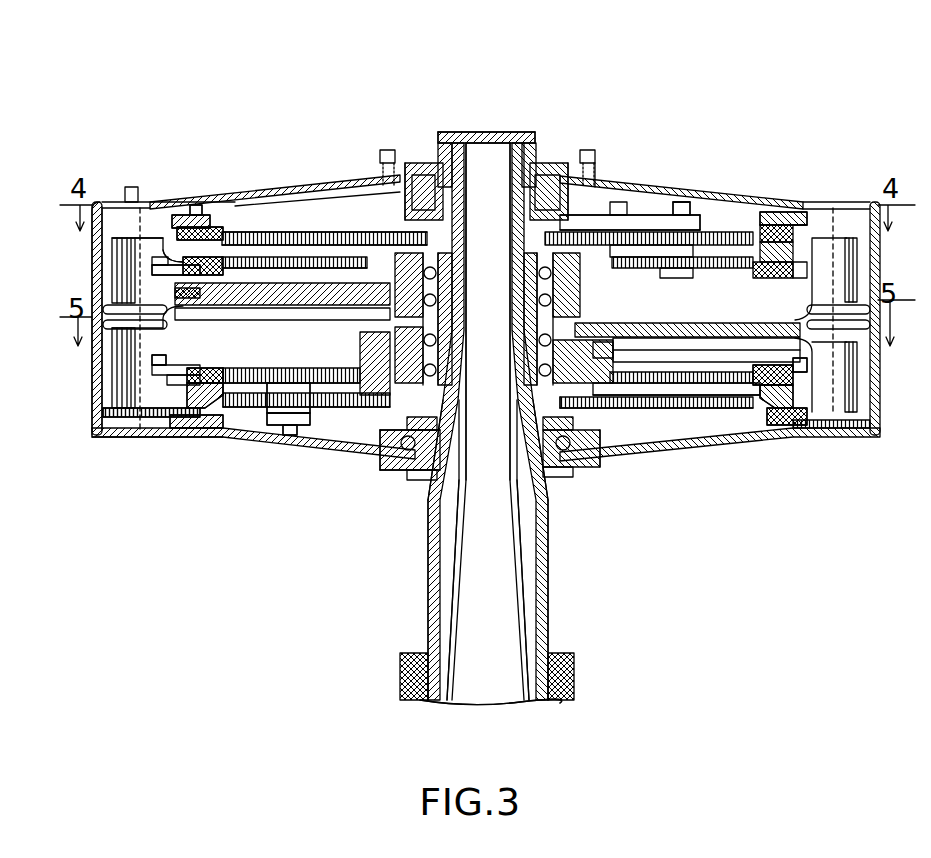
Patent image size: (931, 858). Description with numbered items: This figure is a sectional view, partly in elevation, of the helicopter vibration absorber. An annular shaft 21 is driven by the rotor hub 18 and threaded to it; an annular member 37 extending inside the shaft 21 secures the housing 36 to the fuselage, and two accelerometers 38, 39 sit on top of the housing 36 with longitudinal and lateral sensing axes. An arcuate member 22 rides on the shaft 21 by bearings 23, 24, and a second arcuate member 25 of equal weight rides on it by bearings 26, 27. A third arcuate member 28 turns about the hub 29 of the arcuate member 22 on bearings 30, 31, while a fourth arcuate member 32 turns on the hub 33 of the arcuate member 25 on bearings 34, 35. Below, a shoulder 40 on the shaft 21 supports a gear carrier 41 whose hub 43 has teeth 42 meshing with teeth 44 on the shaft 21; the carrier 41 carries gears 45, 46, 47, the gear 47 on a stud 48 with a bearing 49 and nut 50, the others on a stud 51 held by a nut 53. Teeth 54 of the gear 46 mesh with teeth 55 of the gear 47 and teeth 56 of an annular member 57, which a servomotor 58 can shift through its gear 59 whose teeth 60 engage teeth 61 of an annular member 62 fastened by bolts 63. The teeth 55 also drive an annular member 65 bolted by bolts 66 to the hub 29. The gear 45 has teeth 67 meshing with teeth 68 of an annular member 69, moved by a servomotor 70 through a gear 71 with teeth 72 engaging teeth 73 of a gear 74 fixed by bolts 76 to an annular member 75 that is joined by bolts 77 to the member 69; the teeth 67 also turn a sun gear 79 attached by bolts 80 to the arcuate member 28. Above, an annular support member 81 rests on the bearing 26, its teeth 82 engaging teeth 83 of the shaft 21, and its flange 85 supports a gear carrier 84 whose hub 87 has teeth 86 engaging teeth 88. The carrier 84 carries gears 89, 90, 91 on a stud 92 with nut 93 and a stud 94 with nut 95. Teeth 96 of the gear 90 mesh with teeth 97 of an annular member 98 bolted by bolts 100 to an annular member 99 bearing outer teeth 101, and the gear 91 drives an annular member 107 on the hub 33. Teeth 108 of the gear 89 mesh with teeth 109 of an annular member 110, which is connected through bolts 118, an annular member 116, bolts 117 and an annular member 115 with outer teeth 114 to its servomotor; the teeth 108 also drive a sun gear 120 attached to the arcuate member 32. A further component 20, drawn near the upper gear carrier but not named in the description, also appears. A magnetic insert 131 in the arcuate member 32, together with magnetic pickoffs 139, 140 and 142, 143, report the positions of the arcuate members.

The rotor hub 18 is at (403, 667).
The bolt 20 is at (410, 250).
The annular shaft 21 is at (424, 630).
The arcuate member 22 is at (748, 323).
The bearing 23 is at (520, 385).
The bearing 24 is at (508, 425).
The second arcuate member 25 is at (244, 320).
The bearing 26 is at (420, 262).
The bearing 27 is at (383, 300).
The third arcuate member 28 is at (843, 265).
The hub 29 is at (625, 335).
The bearing 30 is at (690, 338).
The bearing 31 is at (632, 445).
The fourth arcuate member 32 is at (278, 283).
The hub 33 is at (598, 305).
The bearing 34 is at (433, 217).
The bearing 35 is at (383, 358).
The housing 36 is at (790, 200).
The annular member 37 is at (452, 658).
The accelerometer 38 is at (490, 132).
The accelerometer 39 is at (470, 132).
The shoulder 40 is at (432, 478).
The gear carrier 41 is at (330, 440).
The teeth 42 is at (530, 560).
The hub 43 is at (528, 485).
The teeth 44 is at (468, 525).
The gear 45 is at (405, 370).
The gear 46 is at (238, 418).
The gear 47 is at (317, 440).
The stud 48 is at (345, 445).
The bearing 49 is at (395, 430).
The nut 50 is at (360, 445).
The stud 51 is at (290, 372).
The nut 53 is at (277, 440).
The teeth 54 is at (255, 415).
The teeth 55 is at (400, 440).
The teeth 56 is at (700, 410).
The annular member 57 is at (222, 430).
The servomotor 58 is at (812, 300).
The gear 59 is at (855, 433).
The teeth 60 is at (835, 432).
The teeth 61 is at (180, 410).
The annular member 62 is at (195, 420).
The bolts 63 is at (200, 432).
The annular member 65 is at (585, 450).
The bolts 66 is at (600, 455).
The teeth 67 is at (267, 376).
The teeth 68 is at (677, 378).
The annular member 69 is at (235, 377).
The servomotor 70 is at (112, 262).
The gear 71 is at (140, 412).
The teeth 72 is at (165, 412).
The teeth 73 is at (813, 420).
The gear 74 is at (790, 425).
The annular member 75 is at (758, 430).
The bolts 76 is at (735, 430).
The bolts 77 is at (223, 367).
The sun gear 79 is at (665, 445).
The bolts 80 is at (648, 445).
The annular support member 81 is at (515, 135).
The teeth 82 is at (550, 215).
The teeth 83 is at (540, 200).
The gear carrier 84 is at (645, 205).
The flange 85 is at (418, 230).
The teeth 86 is at (425, 205).
The hub 87 is at (452, 215).
The teeth 88 is at (455, 140).
The gear 89 is at (760, 262).
The gear 90 is at (722, 240).
The gear 91 is at (633, 222).
The stud 92 is at (600, 230).
The nut 93 is at (610, 230).
The stud 94 is at (652, 215).
The nut 95 is at (672, 210).
The teeth 96 is at (690, 225).
The teeth 97 is at (340, 250).
The annular member 98 is at (262, 230).
The annular member 99 is at (185, 228).
The bolts 100 is at (207, 232).
The teeth 101 is at (120, 268).
The annular member 107 is at (563, 225).
The teeth 108 is at (755, 205).
The teeth 109 is at (340, 262).
The annular member 110 is at (302, 257).
The teeth 114 is at (150, 250).
The annular member 115 is at (192, 258).
The annular member 116 is at (215, 248).
The bolts 117 is at (203, 263).
The bolts 118 is at (243, 240).
The sun gear 120 is at (385, 200).
The magnetic insert 131 is at (130, 187).
The magnetic pickoff 139 is at (807, 312).
The magnetic pickoff 140 is at (118, 418).
The magnetic pickoff 142 is at (781, 190).
The magnetic pickoff 143 is at (100, 285).